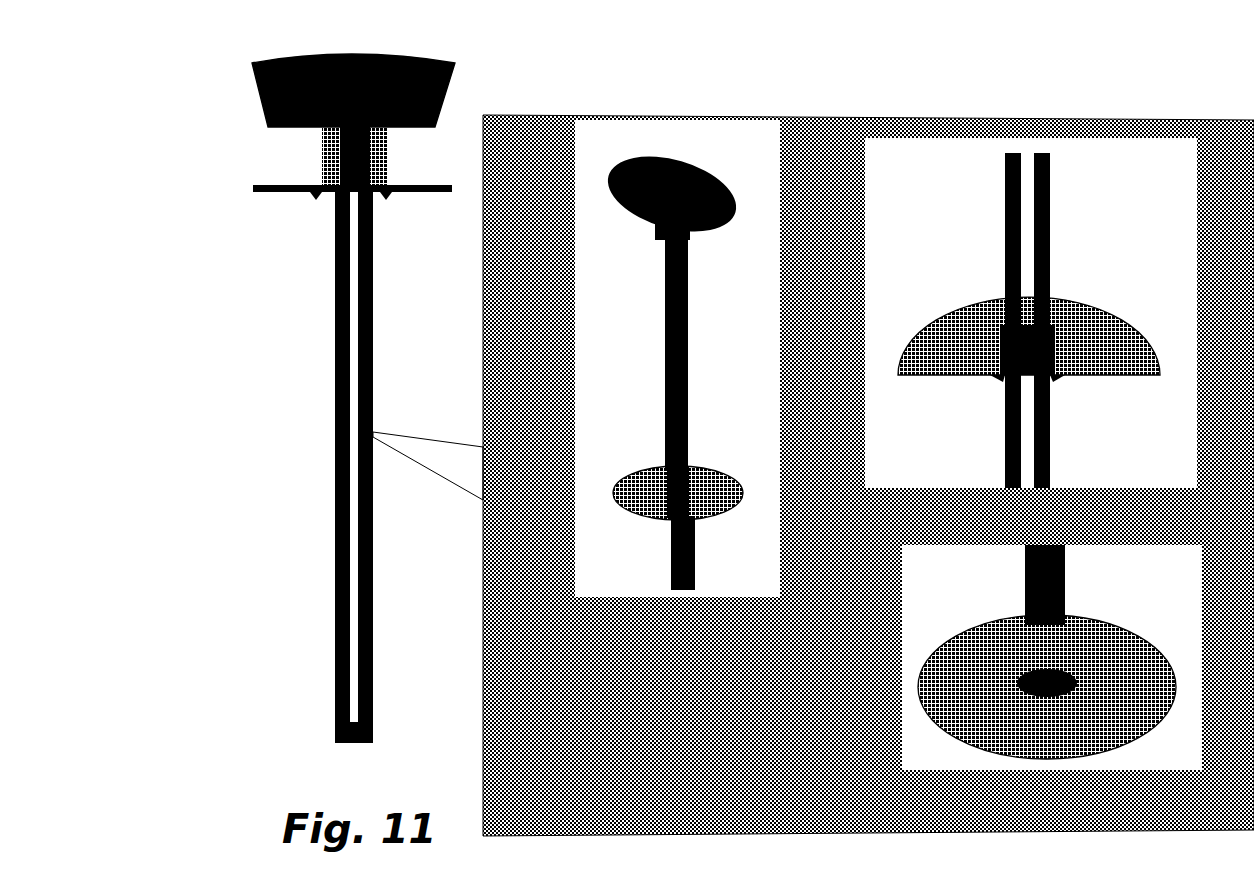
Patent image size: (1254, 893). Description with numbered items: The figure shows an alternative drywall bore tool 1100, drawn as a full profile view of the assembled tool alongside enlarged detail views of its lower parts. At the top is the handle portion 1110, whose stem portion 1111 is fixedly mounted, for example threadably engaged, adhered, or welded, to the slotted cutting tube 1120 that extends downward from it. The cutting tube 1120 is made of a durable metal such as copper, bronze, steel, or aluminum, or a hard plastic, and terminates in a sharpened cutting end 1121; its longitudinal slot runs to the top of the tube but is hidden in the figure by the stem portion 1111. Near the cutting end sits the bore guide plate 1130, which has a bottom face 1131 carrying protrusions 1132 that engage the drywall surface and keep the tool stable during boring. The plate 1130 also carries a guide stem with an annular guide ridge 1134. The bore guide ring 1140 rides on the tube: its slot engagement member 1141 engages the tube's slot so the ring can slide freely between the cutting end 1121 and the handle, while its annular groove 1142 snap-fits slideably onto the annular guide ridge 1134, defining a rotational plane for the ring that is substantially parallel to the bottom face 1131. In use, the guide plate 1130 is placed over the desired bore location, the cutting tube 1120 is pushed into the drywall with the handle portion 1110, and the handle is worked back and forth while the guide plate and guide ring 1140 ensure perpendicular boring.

The drywall bore tool 1100 is at (172, 113).
The handle portion 1110 is at (452, 70).
The stem portion 1111 is at (322, 128).
The slotted cutting tube 1120 is at (330, 350).
The sharpened cutting end 1121 is at (328, 730).
The bore guide plate 1130 is at (265, 185).
The bottom face 1131 is at (916, 698).
The protrusions 1132 is at (333, 520).
The annular guide ridge 1134 is at (1080, 376).
The bore guide ring 1140 is at (692, 430).
The slot engagement member 1141 is at (1052, 237).
The annular groove 1142 is at (995, 378).